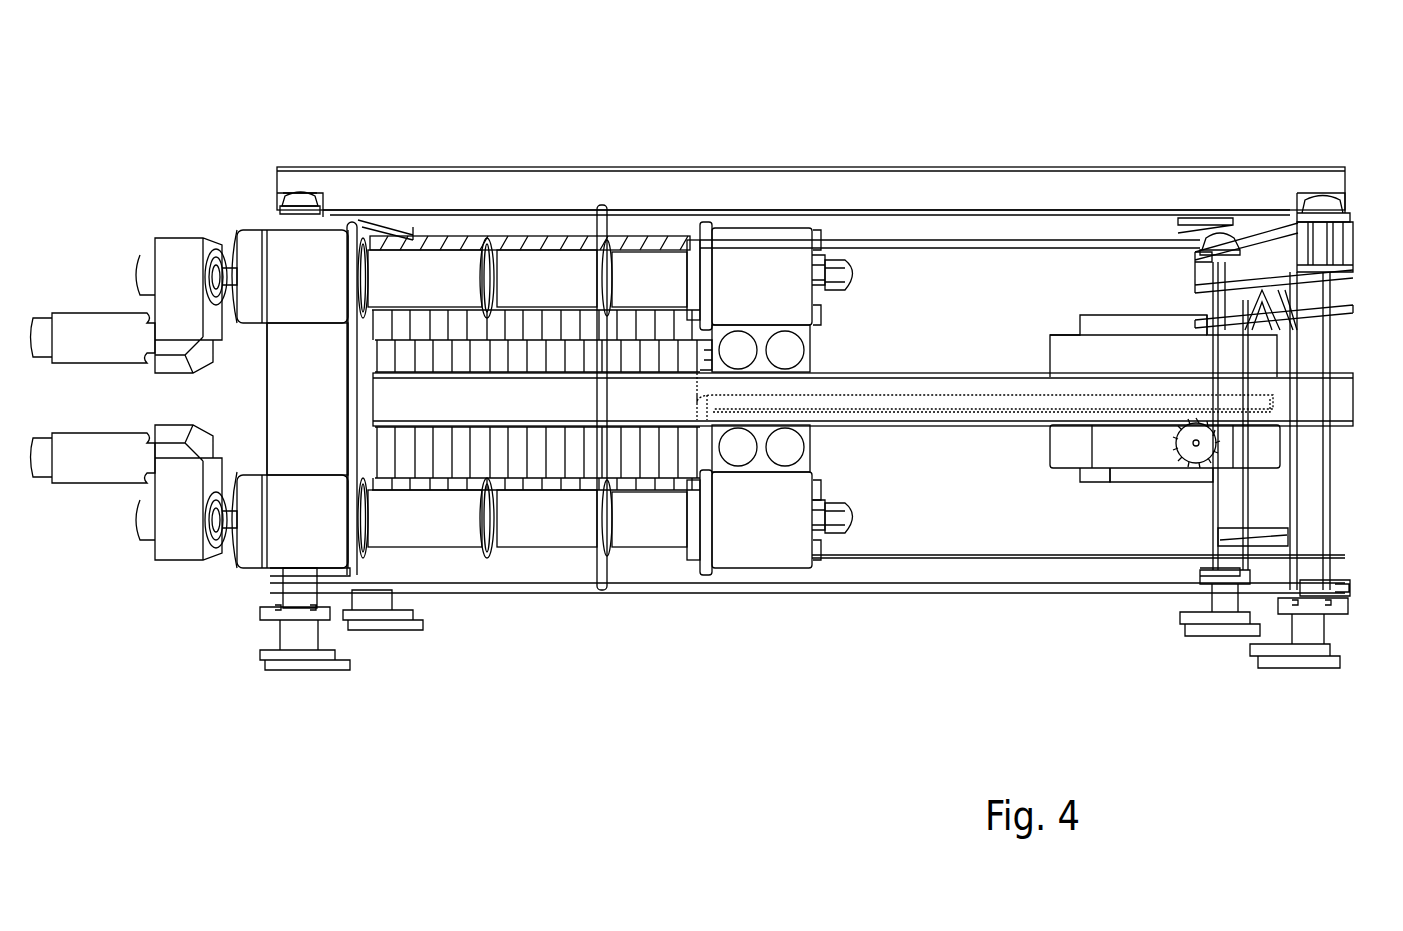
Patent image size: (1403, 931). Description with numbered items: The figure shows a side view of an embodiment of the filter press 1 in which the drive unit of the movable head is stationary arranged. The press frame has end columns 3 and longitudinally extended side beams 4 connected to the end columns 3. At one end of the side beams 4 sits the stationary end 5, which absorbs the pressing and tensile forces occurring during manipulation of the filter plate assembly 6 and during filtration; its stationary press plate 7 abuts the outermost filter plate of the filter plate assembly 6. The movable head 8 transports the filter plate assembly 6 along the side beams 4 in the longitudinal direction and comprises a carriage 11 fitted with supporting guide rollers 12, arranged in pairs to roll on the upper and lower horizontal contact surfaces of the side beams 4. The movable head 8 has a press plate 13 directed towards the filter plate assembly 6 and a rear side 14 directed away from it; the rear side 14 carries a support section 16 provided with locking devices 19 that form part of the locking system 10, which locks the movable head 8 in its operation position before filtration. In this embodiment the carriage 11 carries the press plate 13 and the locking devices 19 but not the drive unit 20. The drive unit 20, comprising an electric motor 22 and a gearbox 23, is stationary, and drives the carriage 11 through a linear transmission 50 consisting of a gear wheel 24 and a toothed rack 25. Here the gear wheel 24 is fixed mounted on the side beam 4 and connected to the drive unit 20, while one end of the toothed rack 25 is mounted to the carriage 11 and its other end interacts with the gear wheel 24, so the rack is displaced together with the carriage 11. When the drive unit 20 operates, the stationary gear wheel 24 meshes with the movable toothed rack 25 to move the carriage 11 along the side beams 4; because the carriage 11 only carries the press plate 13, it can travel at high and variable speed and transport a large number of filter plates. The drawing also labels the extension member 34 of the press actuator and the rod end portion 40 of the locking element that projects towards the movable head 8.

The filter press 1 is at (451, 91).
The end column 3 is at (1310, 545).
The side beam 4 is at (1353, 393).
The stationary end 5 is at (318, 410).
The filter plate assembly 6 is at (518, 460).
The stationary press plate 7 is at (360, 228).
The movable head 8 is at (785, 540).
The locking system 10 is at (720, 195).
The carriage 11 is at (828, 572).
The supporting guide roller 12 is at (797, 446).
The press plate 13 is at (703, 580).
The rear side 14 is at (905, 295).
The support section 16 is at (752, 268).
The locking device 19 is at (825, 263).
The drive unit 20 is at (1067, 464).
The electric motor 22 is at (1087, 495).
The gearbox 23 is at (1118, 495).
The gear wheel 24 is at (1200, 465).
The toothed rack 25 is at (1008, 408).
The extension member 34 is at (540, 287).
The rod end portion 40 is at (845, 265).
The linear transmission 50 is at (1240, 438).